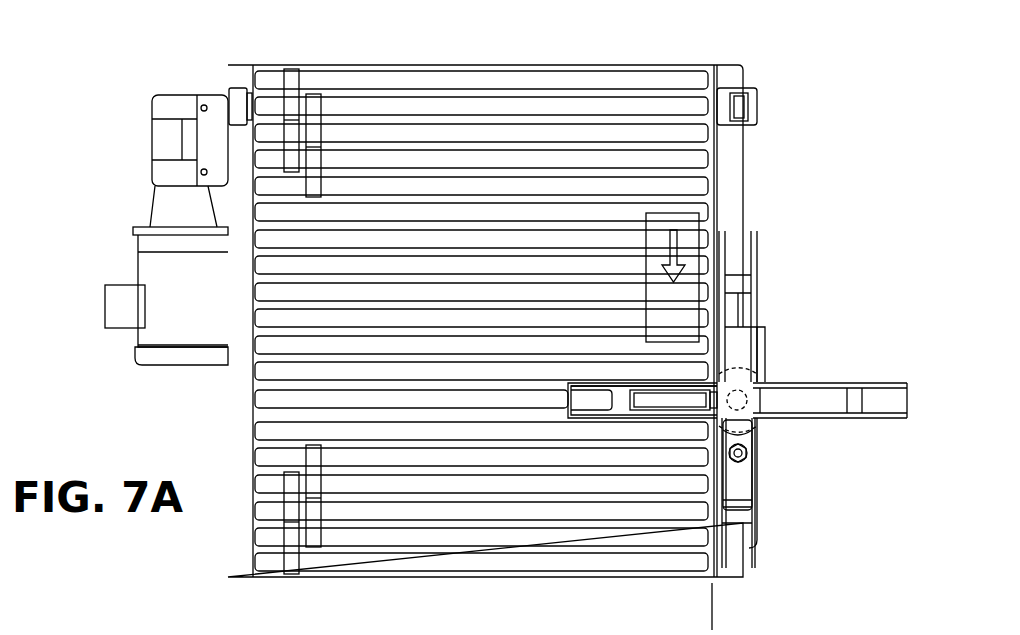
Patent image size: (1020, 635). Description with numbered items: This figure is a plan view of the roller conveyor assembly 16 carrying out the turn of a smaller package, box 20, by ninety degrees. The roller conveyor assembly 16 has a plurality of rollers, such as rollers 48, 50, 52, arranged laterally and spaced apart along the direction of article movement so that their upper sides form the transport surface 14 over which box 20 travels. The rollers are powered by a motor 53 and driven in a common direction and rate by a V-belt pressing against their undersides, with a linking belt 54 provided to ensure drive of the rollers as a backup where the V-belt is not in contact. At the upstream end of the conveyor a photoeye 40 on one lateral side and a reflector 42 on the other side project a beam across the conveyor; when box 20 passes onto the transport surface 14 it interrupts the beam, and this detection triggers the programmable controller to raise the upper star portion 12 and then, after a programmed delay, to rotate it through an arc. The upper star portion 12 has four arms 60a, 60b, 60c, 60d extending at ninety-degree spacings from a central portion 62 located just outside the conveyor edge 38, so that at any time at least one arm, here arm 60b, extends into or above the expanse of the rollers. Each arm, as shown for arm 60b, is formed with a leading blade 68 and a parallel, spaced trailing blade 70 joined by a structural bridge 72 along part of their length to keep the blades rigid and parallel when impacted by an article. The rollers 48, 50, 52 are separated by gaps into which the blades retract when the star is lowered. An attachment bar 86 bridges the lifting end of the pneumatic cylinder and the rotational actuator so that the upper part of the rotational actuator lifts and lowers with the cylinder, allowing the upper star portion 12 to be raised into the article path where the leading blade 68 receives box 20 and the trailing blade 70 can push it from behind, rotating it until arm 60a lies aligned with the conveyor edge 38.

The upper star portion 12 is at (795, 355).
The transport surface 14 is at (470, 260).
The roller conveyor assembly 16 is at (820, 162).
The rectangular box 20 is at (660, 315).
The conveyor edge 38 is at (713, 607).
The photoeye emitter/detector 40 is at (758, 108).
The reflector 42 is at (242, 88).
The roller 48 is at (262, 380).
The roller 50 is at (262, 408).
The roller 52 is at (262, 438).
The motor 53 is at (128, 262).
The linking belt 54 is at (296, 78).
The arm 60a is at (758, 545).
The arm 60b is at (622, 374).
The arm 60c is at (758, 255).
The arm 60d is at (882, 383).
The central portion 62 is at (746, 400).
The leading blade 68 is at (592, 418).
The trailing blade 70 is at (585, 383).
The structural bridge 72 is at (620, 405).
The attachment bar 86 is at (745, 440).